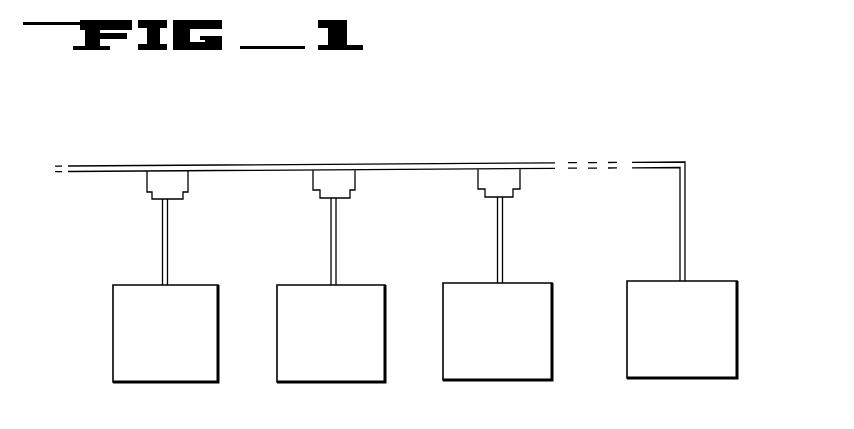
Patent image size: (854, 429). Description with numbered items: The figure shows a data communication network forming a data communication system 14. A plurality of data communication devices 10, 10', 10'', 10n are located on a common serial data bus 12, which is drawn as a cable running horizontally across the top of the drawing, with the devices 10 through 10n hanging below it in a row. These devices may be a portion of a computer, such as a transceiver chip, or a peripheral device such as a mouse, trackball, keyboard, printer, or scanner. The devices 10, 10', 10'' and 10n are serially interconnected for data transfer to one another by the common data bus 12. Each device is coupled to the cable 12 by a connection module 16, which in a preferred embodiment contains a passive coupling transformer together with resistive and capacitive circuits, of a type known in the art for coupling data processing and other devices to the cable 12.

The data communication device 10 is at (184, 333).
The data communication device 10' is at (351, 333).
The data communication device 10'' is at (521, 331).
The data communication device 10n is at (738, 335).
The serial data bus 12 is at (214, 166).
The data communication system 14 is at (727, 186).
The connection module 16 is at (356, 183).